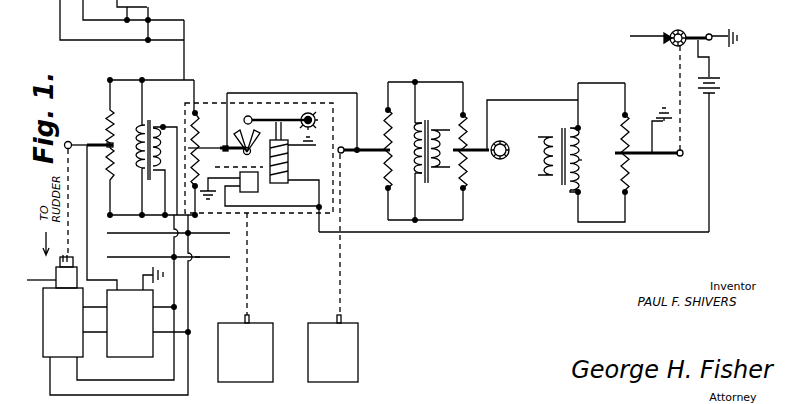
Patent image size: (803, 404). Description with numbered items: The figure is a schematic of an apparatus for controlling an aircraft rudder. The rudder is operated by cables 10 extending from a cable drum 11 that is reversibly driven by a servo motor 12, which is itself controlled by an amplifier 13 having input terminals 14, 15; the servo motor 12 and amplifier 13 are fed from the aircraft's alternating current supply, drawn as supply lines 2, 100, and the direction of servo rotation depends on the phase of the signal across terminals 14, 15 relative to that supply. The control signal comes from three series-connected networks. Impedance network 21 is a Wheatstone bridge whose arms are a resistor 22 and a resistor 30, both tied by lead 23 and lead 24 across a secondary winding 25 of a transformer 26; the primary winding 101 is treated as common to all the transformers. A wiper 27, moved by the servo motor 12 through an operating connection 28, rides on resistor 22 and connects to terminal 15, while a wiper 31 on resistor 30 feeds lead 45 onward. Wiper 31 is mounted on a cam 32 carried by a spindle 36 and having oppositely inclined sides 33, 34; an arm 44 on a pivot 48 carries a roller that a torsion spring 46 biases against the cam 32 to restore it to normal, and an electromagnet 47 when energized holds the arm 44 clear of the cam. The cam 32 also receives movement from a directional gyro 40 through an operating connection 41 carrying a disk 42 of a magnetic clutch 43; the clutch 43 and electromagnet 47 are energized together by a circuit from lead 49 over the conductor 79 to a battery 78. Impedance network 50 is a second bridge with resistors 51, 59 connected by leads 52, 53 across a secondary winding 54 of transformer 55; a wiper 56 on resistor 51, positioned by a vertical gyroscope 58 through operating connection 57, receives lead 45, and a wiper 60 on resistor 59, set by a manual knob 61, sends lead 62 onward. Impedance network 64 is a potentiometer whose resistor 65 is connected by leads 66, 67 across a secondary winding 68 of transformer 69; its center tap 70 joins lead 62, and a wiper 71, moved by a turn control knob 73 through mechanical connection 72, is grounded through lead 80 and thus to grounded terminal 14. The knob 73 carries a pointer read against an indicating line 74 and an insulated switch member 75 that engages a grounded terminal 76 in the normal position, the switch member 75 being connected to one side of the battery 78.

The power supply lines 2 is at (170, 273).
The cables 10 is at (44, 288).
The cable drum 11 is at (68, 256).
The servo motor 12 is at (43, 350).
The amplifier 13 is at (107, 348).
The input terminal 14 is at (145, 275).
The input terminal 15 is at (107, 281).
The impedance network 21 is at (120, 114).
The resistor 22 is at (109, 142).
The lead 23 is at (110, 214).
The lead 24 is at (110, 80).
The secondary winding 25 is at (112, 165).
The transformer 26 is at (164, 176).
The wiper 27 is at (68, 141).
The operating connection 28 is at (81, 151).
The resistor 30 is at (195, 95).
The wiper 31 is at (203, 140).
The cam 32 is at (226, 146).
The inclined side 33 is at (228, 93).
The inclined side 34 is at (259, 128).
The spindle 36 is at (212, 151).
The directional gyro 40 is at (273, 323).
The operating driving connection 41 is at (246, 296).
The disk 42 is at (250, 193).
The magnetic clutch 43 is at (256, 192).
The arm 44 is at (288, 117).
The lead 45 is at (273, 93).
The torsion spring 46 is at (303, 113).
The electromagnet 47 is at (292, 146).
The pivot 48 is at (312, 113).
The lead 49 is at (316, 211).
The impedance network 50 is at (390, 120).
The resistor 51 is at (358, 100).
The lead 52 is at (401, 82).
The lead 53 is at (415, 221).
The secondary winding 54 is at (414, 160).
The transformer 55 is at (430, 188).
The wiper 56 is at (386, 163).
The operating connection 57 is at (340, 275).
The vertical gyroscope 58 is at (359, 332).
The resistor 59 is at (464, 170).
The wiper 60 is at (464, 125).
The manually operated knob 61 is at (502, 160).
The lead 62 is at (514, 100).
The impedance network 64 is at (624, 103).
The resistor 65 is at (628, 182).
The lead 66 is at (600, 83).
The lead 67 is at (622, 221).
The secondary winding 68 is at (580, 192).
The transformer 69 is at (559, 189).
The center tap 70 is at (582, 160).
The wiper 71 is at (634, 154).
The mechanical connection 72 is at (679, 84).
The turn control knob 73 is at (673, 28).
The indicating line 74 is at (642, 34).
The switch member 75 is at (698, 30).
The terminal 76 is at (709, 32).
The battery 78 is at (715, 100).
The conductor 79 is at (377, 233).
The lead 80 is at (626, 130).
The supply line 100 is at (199, 258).
The transformer 101 is at (146, 127).